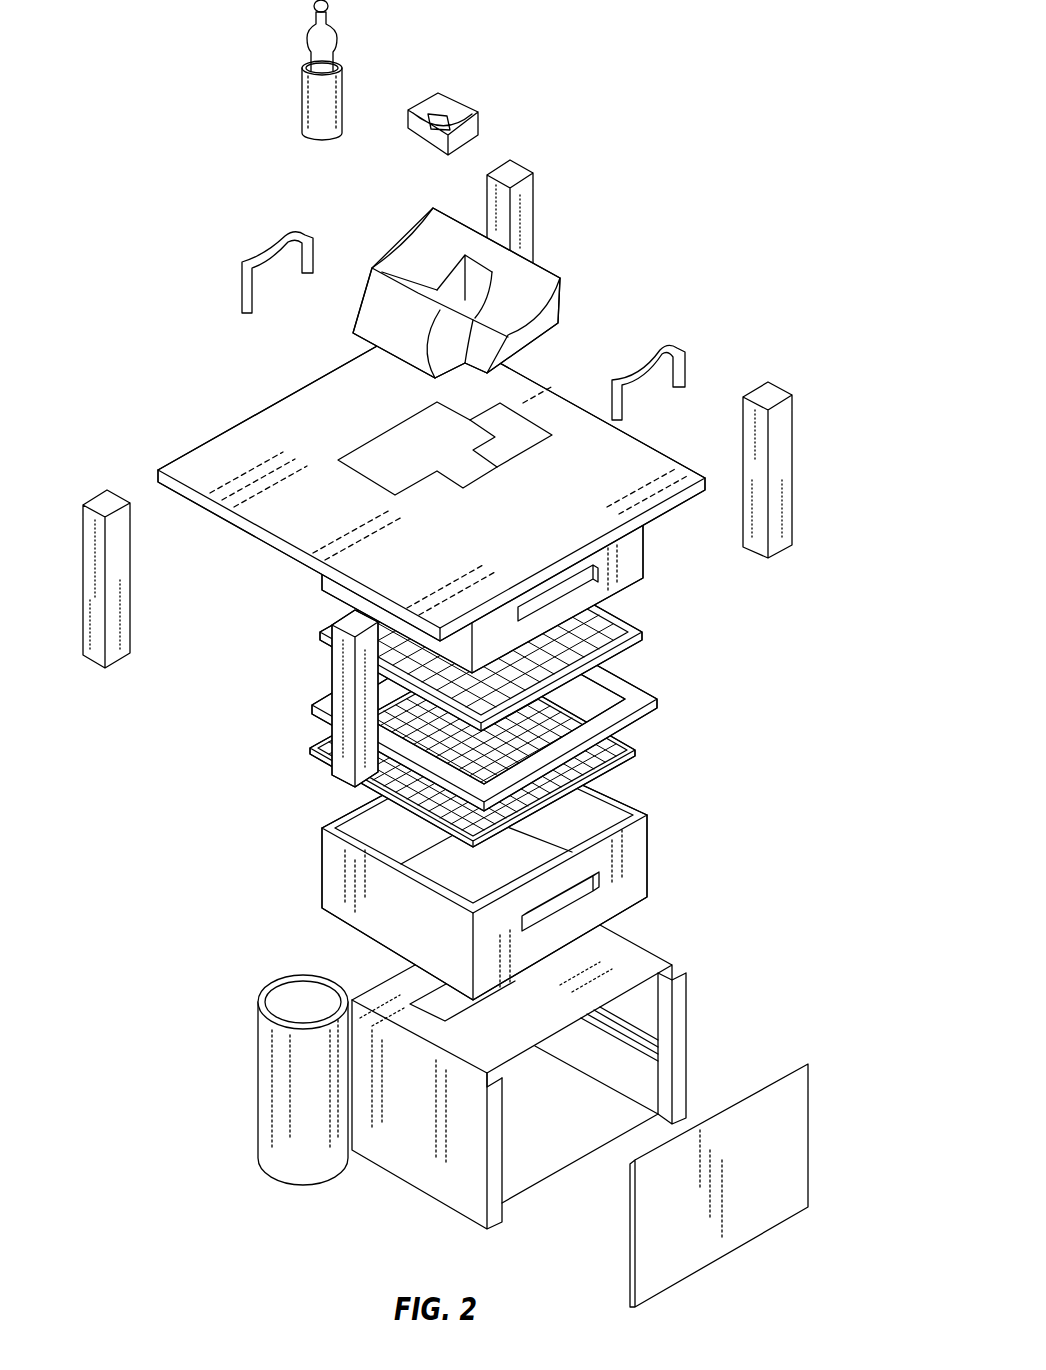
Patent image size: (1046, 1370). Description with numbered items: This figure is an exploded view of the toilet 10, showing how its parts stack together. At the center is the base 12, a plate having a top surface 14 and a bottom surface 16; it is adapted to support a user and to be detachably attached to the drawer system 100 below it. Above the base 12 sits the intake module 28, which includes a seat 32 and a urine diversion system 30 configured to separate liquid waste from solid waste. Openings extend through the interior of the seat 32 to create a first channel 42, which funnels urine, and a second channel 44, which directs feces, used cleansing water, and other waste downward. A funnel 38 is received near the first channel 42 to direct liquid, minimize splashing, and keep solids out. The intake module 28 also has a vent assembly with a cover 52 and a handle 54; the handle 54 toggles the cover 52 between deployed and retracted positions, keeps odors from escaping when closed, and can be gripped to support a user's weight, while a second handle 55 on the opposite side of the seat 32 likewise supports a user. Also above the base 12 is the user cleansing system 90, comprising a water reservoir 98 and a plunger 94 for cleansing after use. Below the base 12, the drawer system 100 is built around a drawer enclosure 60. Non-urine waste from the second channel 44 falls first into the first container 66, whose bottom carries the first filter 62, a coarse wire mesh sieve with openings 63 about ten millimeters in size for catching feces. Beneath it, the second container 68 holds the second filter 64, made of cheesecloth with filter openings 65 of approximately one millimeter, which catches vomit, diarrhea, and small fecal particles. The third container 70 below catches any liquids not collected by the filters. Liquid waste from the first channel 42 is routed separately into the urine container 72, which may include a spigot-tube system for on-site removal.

The toilet 10 is at (445, 653).
The base 12 is at (642, 452).
The top surface 14 is at (212, 462).
The bottom surface 16 is at (232, 528).
The intake module 28 is at (404, 204).
The urine diversion system 30 is at (449, 302).
The seat 32 is at (563, 307).
The funnel 38 is at (433, 108).
The first channel 42 is at (418, 318).
The second channel 44 is at (490, 275).
The cover 52 is at (363, 457).
The handle 54 is at (275, 252).
The second handle 55 is at (647, 367).
The drawer enclosure 60 is at (688, 1035).
The first filter 62 is at (638, 638).
The openings 63 is at (627, 628).
The second filter 64 is at (312, 742).
The filter openings 65 is at (618, 760).
The first container 66 is at (630, 548).
The second container 68 is at (657, 705).
The third container 70 is at (633, 858).
The urine container 72 is at (256, 1080).
The user cleansing system 90 is at (256, 86).
The plunger 94 is at (307, 35).
The water reservoir 98 is at (340, 90).
The drawer system 100 is at (688, 952).